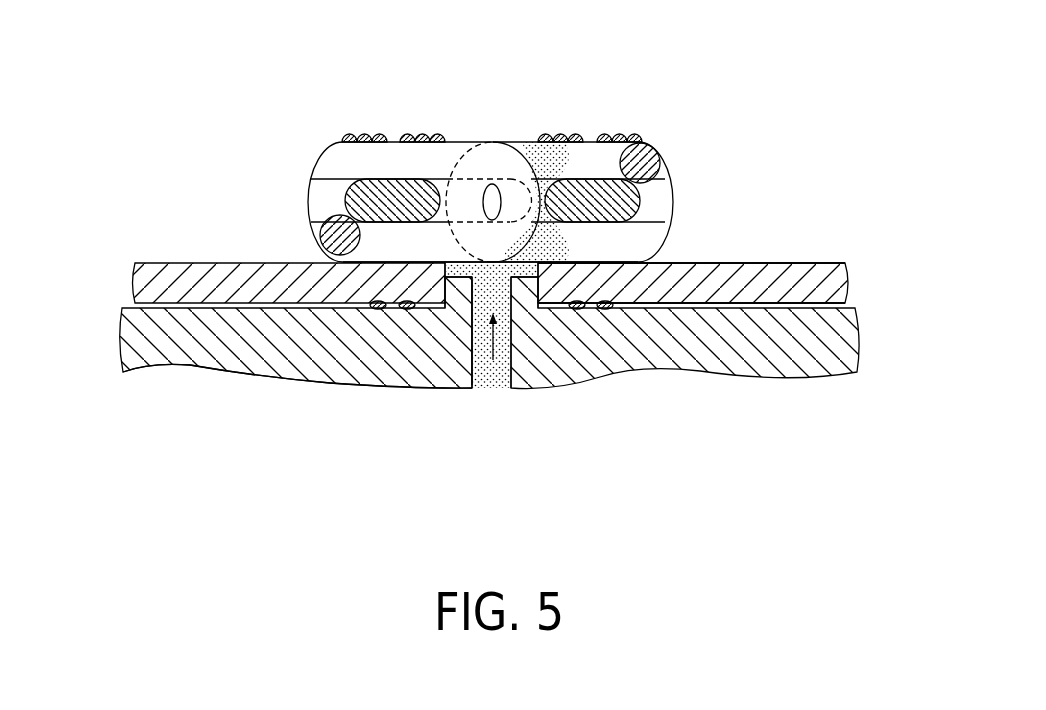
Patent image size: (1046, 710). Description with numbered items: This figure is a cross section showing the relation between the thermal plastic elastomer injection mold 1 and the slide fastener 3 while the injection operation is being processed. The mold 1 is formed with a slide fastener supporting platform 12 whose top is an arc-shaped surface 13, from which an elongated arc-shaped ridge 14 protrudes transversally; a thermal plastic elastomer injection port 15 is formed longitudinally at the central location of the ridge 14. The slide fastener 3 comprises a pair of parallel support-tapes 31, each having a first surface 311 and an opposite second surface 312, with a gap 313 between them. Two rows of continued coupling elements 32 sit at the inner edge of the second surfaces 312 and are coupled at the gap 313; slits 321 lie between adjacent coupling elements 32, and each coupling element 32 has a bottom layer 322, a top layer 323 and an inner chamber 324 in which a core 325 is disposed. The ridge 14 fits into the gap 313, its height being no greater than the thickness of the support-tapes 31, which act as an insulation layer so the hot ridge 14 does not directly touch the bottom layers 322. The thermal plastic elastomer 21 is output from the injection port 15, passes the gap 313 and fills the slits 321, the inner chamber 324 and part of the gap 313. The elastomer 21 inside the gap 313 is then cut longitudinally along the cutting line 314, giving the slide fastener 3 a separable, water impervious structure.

The thermal plastic elastomer injection mold 1 is at (137, 336).
The slide fastener supporting platform 12 is at (202, 338).
The arc-shaped surface 13 is at (833, 307).
The arc-shaped ridge 14 is at (457, 287).
The thermal plastic elastomer injection port 15 is at (472, 367).
The thermal plastic elastomer 21 is at (535, 155).
The slide fastener 3 is at (762, 240).
The support-tapes 31 is at (813, 280).
The first surface 311 is at (773, 309).
The second surface 312 is at (730, 263).
The gap 313 is at (542, 268).
The cutting line 314 is at (460, 290).
The coupling elements 32 is at (670, 170).
The slits 321 is at (573, 155).
The bottom layer 322 is at (397, 252).
The top layer 323 is at (403, 163).
The inner chamber 324 is at (600, 222).
The core 325 is at (365, 188).